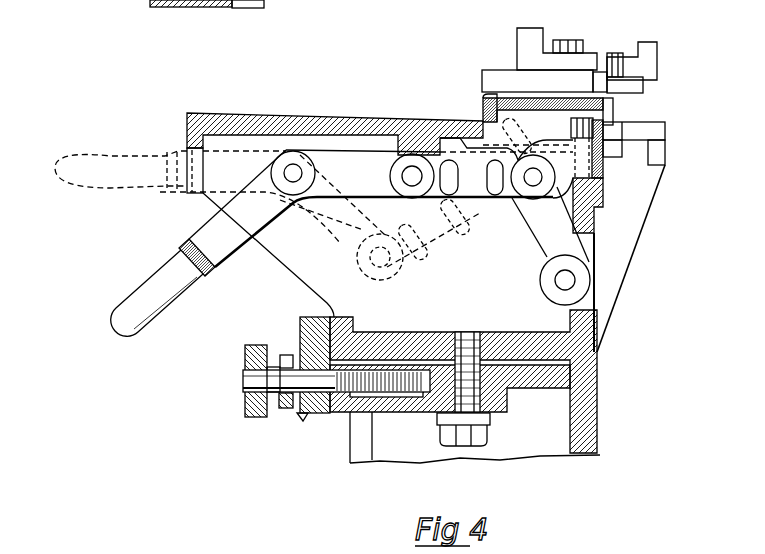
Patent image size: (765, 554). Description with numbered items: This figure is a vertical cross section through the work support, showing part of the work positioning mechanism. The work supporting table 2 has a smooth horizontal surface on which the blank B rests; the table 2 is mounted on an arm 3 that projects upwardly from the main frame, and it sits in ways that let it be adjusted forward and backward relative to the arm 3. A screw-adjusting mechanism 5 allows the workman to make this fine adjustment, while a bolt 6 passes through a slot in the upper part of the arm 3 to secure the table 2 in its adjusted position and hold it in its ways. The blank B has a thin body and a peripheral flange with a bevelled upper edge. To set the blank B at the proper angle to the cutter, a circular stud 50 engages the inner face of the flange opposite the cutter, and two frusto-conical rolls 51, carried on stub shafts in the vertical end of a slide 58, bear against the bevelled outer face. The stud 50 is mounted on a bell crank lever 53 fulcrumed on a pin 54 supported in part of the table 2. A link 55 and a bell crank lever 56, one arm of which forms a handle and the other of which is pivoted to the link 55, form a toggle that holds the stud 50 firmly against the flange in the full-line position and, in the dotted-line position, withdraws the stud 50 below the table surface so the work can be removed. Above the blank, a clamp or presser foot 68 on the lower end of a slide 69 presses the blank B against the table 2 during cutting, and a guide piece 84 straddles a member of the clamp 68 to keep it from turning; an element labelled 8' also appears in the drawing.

The work supporting table 2 is at (222, 114).
The arm 3 is at (362, 457).
The screw-adjusting mechanism 5 is at (340, 397).
The bolt 6 is at (507, 413).
The guide strip 8' is at (463, 94).
The blank B is at (507, 115).
The circular stud 50 is at (575, 120).
The rolls 51 is at (612, 103).
The bell crank lever 53 is at (530, 218).
The pin 54 is at (565, 280).
The link 55 is at (467, 187).
The bell crank lever 56 is at (225, 248).
The slide 58 is at (647, 58).
The clamp or presser foot 68 is at (502, 74).
The slide 69 is at (580, 38).
The guide piece 84 is at (527, 90).